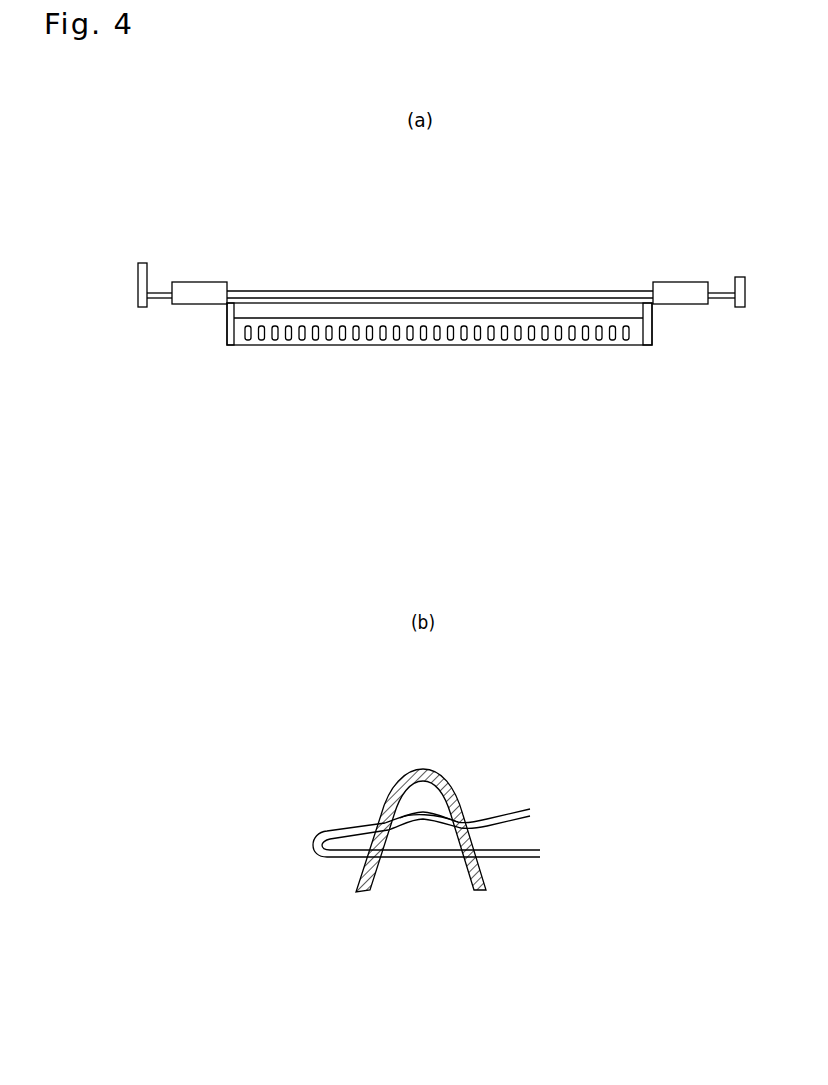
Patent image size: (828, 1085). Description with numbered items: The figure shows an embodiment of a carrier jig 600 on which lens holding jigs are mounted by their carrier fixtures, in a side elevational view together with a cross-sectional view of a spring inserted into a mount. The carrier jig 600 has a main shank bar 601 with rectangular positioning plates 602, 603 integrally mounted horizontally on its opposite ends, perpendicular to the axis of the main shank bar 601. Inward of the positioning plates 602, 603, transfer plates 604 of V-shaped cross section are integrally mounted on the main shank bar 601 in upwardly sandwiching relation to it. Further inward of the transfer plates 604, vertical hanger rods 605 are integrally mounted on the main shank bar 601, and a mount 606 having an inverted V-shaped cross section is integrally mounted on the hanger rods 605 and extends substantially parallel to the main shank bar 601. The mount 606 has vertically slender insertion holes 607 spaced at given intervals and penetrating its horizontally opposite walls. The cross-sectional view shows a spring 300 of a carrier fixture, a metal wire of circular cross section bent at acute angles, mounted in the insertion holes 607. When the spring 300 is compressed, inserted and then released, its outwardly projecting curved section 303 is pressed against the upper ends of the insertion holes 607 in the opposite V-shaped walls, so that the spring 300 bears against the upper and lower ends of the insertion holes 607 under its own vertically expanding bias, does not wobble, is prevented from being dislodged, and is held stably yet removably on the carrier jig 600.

The carrier jig 600 is at (331, 237).
The main shank bar 601 is at (447, 290).
The positioning plate 602 is at (143, 262).
The positioning plate 603 is at (740, 309).
The transfer plate 604 is at (192, 281).
The hanger rod 605 is at (226, 330).
The mount 606 is at (568, 344).
The insertion hole 607 is at (290, 334).
The spring 300 is at (314, 842).
The curved section 303 is at (418, 811).